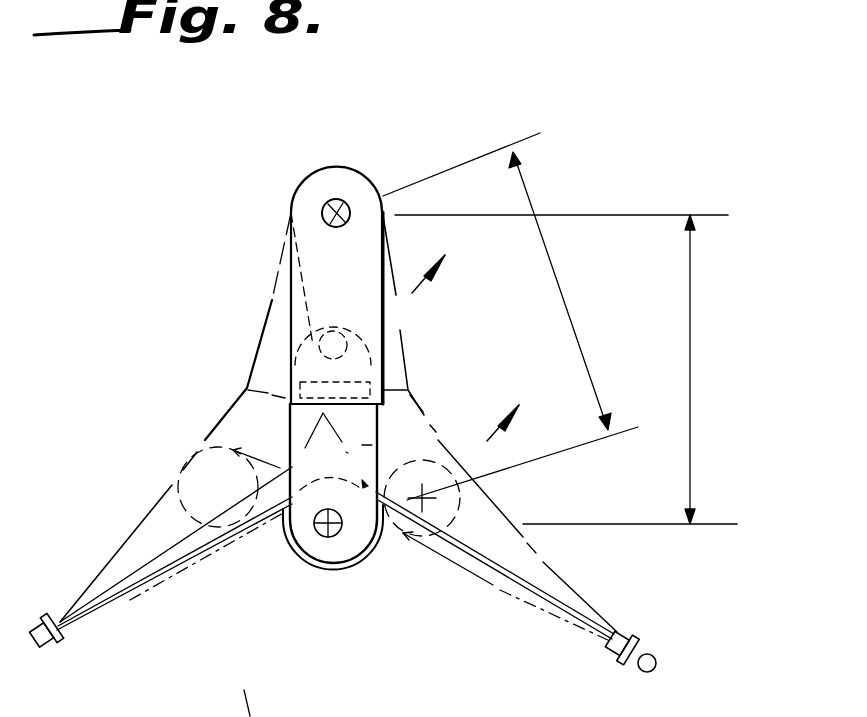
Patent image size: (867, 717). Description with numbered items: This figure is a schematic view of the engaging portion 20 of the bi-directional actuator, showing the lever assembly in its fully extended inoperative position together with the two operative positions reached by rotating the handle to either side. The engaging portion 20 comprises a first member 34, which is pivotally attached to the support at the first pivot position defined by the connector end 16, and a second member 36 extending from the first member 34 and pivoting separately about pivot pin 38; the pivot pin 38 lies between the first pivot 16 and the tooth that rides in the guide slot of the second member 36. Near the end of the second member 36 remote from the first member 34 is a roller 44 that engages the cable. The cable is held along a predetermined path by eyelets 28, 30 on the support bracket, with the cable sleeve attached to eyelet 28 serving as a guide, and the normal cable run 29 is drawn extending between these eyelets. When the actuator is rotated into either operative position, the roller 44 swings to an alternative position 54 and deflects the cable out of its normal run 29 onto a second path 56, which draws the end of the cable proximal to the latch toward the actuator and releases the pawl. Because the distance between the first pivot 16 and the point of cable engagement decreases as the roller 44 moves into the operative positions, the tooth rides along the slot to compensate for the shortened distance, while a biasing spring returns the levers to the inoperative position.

The pinion like end of connector 16 is at (338, 206).
The first member 34 is at (383, 187).
The pivot pin 38 is at (329, 345).
The second member 36 is at (380, 441).
The roller 44 is at (350, 570).
The roller position 54 is at (197, 467).
The eyelet 28 is at (62, 648).
The eyelet 30 is at (638, 640).
The engaging portion 20 is at (650, 673).
The cable 29 is at (537, 597).
The second path 56 is at (562, 578).